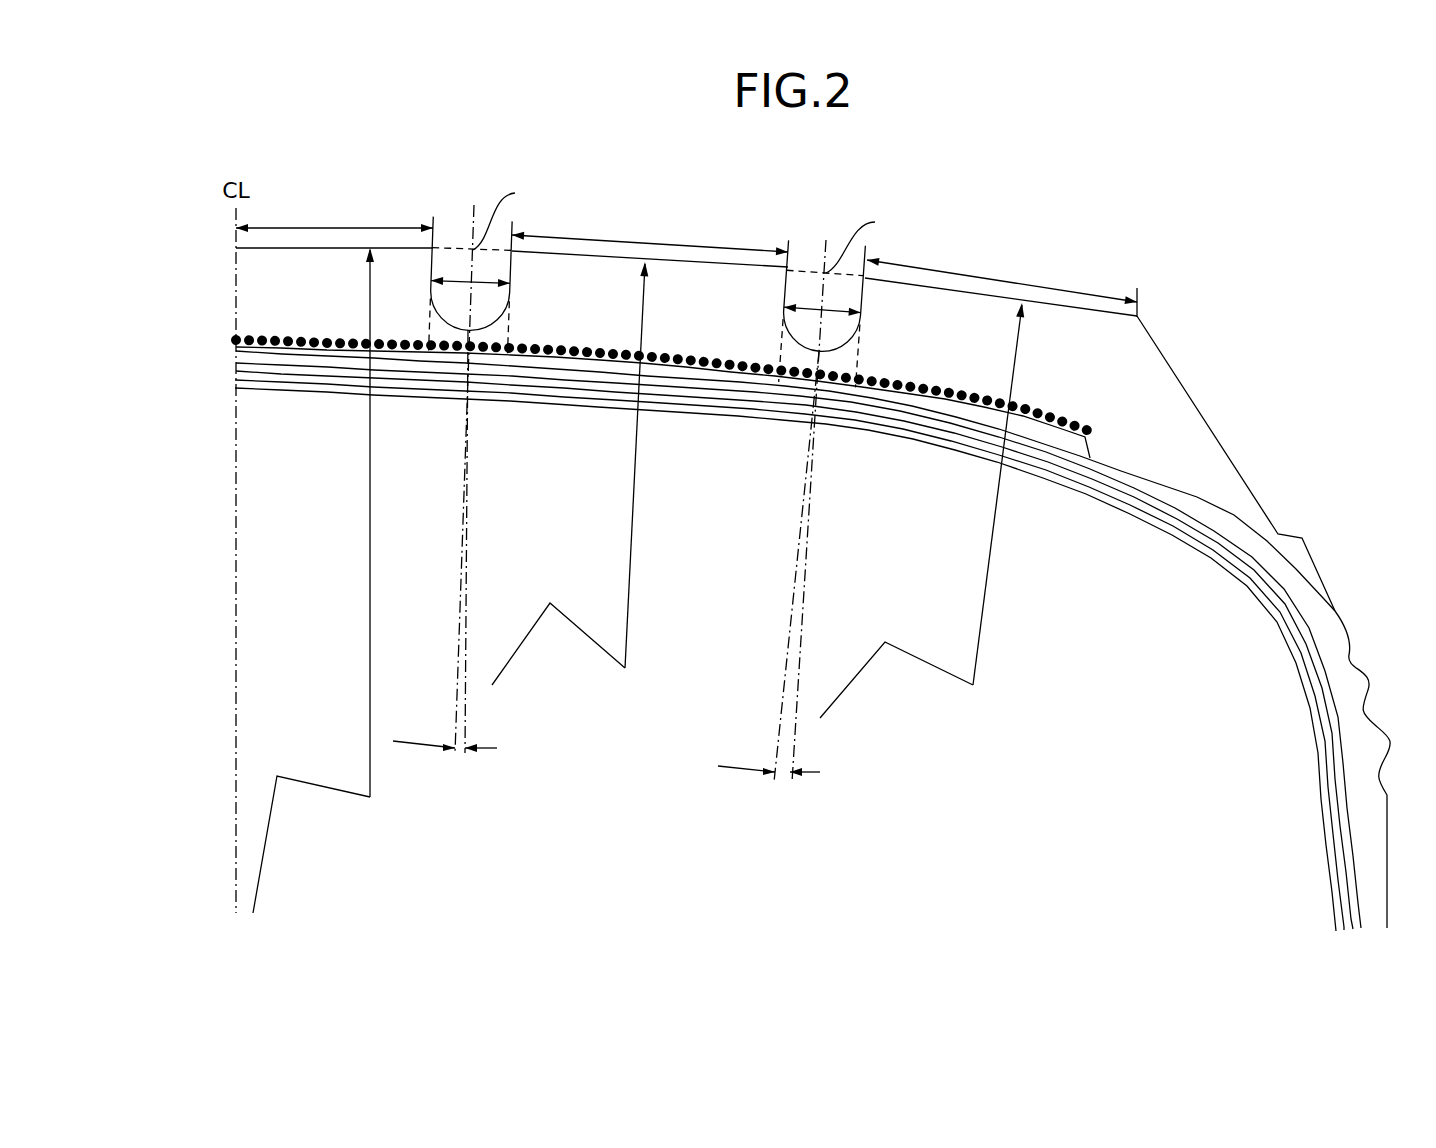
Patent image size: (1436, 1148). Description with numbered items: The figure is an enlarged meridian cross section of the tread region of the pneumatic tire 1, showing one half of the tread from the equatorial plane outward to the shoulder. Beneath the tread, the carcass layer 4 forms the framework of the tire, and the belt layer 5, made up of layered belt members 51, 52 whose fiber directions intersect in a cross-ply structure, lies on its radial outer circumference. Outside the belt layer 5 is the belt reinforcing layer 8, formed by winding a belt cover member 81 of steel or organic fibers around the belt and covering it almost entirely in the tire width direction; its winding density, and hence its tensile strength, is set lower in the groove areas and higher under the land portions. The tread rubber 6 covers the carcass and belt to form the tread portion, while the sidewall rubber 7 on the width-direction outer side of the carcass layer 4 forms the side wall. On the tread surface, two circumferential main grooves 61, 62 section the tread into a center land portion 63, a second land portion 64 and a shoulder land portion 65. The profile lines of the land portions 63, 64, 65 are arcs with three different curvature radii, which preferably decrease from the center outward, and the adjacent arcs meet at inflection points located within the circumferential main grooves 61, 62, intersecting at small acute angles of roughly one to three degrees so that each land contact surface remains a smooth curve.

The pneumatic tire 1 is at (1190, 231).
The carcass layer 4 is at (1319, 717).
The belt layer 5 is at (655, 473).
The belt member 51 is at (695, 382).
The belt member 52 is at (733, 380).
The tread rubber 6 is at (1182, 420).
The sidewall rubber 7 is at (1355, 692).
The belt reinforcing layer 8 is at (1027, 350).
The belt cover member 81 is at (1032, 407).
The circumferential main groove 61 is at (453, 228).
The circumferential main groove 62 is at (808, 255).
The center land portion 63 is at (250, 262).
The second land portion 64 is at (568, 268).
The shoulder land portion 65 is at (940, 304).